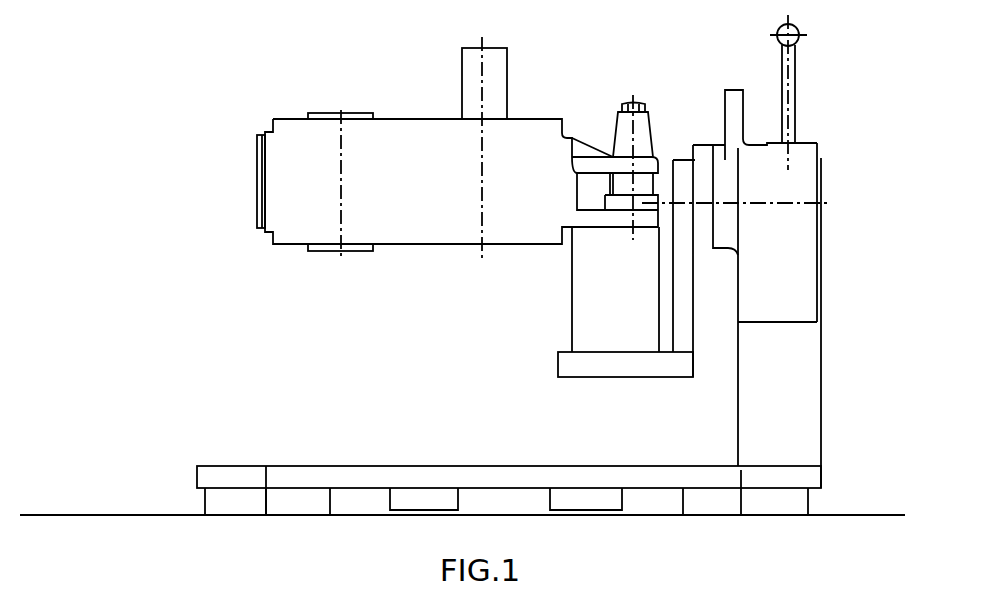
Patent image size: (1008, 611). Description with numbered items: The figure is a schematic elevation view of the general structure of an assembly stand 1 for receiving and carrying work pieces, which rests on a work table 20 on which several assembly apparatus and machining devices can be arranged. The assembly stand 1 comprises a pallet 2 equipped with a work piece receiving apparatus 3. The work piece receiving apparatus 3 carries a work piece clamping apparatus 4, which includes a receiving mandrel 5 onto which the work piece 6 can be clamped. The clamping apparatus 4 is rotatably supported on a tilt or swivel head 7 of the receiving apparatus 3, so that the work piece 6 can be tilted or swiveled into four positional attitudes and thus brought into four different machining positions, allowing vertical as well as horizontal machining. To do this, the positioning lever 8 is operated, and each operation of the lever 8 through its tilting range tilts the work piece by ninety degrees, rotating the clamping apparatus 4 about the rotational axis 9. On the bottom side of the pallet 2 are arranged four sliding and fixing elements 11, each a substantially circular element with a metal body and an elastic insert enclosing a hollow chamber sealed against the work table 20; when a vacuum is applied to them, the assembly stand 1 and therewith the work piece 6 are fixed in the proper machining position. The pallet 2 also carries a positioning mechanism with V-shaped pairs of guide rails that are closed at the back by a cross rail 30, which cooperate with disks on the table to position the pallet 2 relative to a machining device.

The assembly stand 1 is at (356, 347).
The pallet 2 is at (226, 473).
The work piece receiving apparatus 3 is at (752, 420).
The work piece clamping apparatus 4 is at (588, 295).
The receiving mandrel 5 is at (648, 148).
The work piece 6 is at (277, 188).
The tilt or swivel head 7 is at (748, 308).
The positioning lever 8 is at (778, 32).
The rotational axis 9 is at (745, 203).
The sliding and fixing elements 11 is at (232, 507).
The work table 20 is at (138, 515).
The cross rail 30 is at (417, 500).